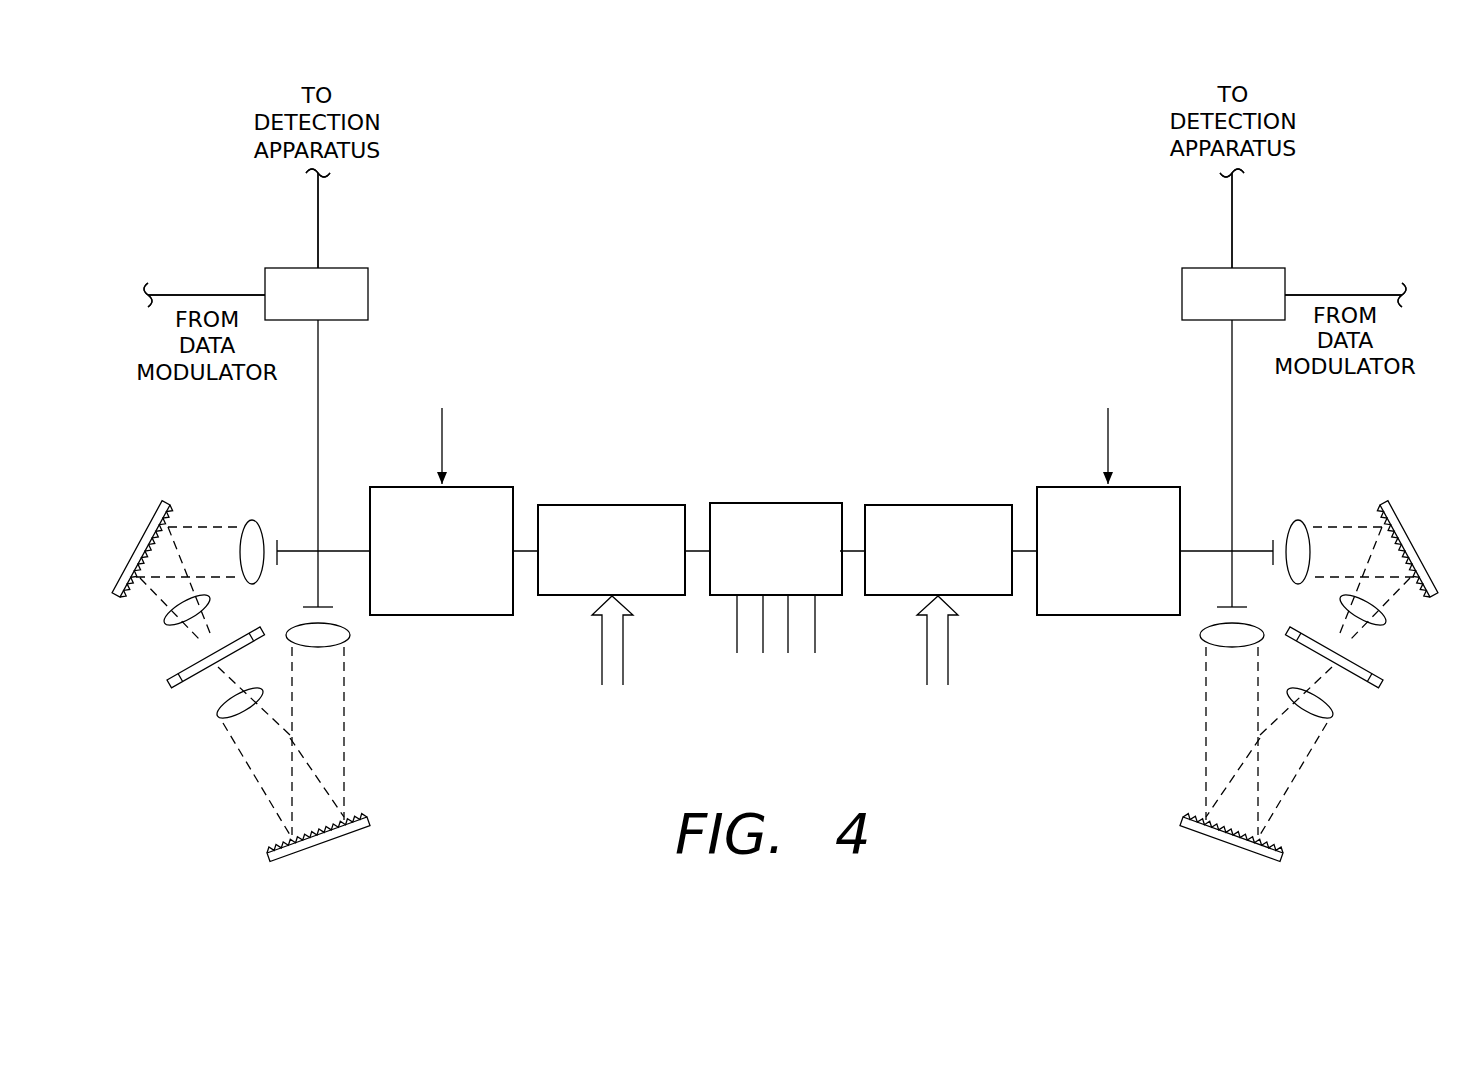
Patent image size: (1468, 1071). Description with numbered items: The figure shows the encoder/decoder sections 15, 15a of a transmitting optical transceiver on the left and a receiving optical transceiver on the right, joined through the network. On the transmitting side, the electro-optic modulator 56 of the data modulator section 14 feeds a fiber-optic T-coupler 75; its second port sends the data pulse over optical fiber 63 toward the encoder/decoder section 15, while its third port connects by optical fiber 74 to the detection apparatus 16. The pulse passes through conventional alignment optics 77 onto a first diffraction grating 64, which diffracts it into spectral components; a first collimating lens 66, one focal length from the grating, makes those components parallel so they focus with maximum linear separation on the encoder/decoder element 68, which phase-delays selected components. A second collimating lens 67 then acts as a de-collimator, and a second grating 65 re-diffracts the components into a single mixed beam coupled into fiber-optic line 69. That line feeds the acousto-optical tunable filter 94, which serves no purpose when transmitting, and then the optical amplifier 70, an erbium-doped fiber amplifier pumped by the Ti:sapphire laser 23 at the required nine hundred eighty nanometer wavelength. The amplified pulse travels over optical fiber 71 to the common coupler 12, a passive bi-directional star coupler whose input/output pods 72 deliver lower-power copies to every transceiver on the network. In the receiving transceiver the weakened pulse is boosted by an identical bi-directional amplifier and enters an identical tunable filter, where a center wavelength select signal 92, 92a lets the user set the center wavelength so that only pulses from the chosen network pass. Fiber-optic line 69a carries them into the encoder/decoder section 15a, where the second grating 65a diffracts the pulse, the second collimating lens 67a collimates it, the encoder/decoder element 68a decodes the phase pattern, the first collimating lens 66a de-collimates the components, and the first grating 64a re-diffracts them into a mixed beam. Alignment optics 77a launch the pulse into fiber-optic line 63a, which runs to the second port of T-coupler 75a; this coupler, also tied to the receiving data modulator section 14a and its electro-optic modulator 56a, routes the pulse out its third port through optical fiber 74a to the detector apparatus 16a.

The common coupler 12 is at (777, 502).
The data modulator section 14 is at (136, 334).
The data modulator section 14a is at (1412, 332).
The encoder/decoder section 15 is at (342, 528).
The encoder/decoder section 15a is at (1210, 528).
The detection apparatus 16 is at (414, 110).
The detector apparatus 16a is at (1148, 112).
The Ti:sapphire laser 23 is at (602, 668).
The electro-optic modulator 56 is at (212, 292).
The data modulator input line 56a is at (1336, 290).
The optical fiber 63 is at (316, 422).
The fiber-optic line 63a is at (1235, 418).
The first optical diffraction grating 64 is at (368, 820).
The first optical diffraction grating 64a is at (1183, 818).
The second optical diffraction grating 65 is at (170, 505).
The second optical diffraction grating 65a is at (1382, 504).
The first collimating lens 66 is at (222, 724).
The first collimating lens 66a is at (1330, 720).
The second collimating lens 67 is at (170, 632).
The second collimating lens 67a is at (1378, 632).
The encoder/decoder element 68 is at (177, 688).
The encoder/decoder element 68a is at (1376, 684).
The fiber-optic line 69 is at (278, 548).
The fiber-optic line 69a is at (1270, 546).
The optical amplifier 70 is at (612, 504).
The optical fiber 71 is at (692, 548).
The input/output pods 72 is at (788, 630).
The optical fiber 74 is at (320, 218).
The optical fiber 74a is at (1230, 215).
The fiber-optic T-coupler 75 is at (370, 285).
The fiber-optic T-coupler 75a is at (1180, 285).
The conventional alignment optics 77 is at (342, 615).
The conventional alignment optics 77a is at (1208, 615).
The center wavelength select signal 92 is at (444, 420).
The RF drive input 92a is at (1106, 420).
The acousto-optical tunable filter 94 is at (500, 486).